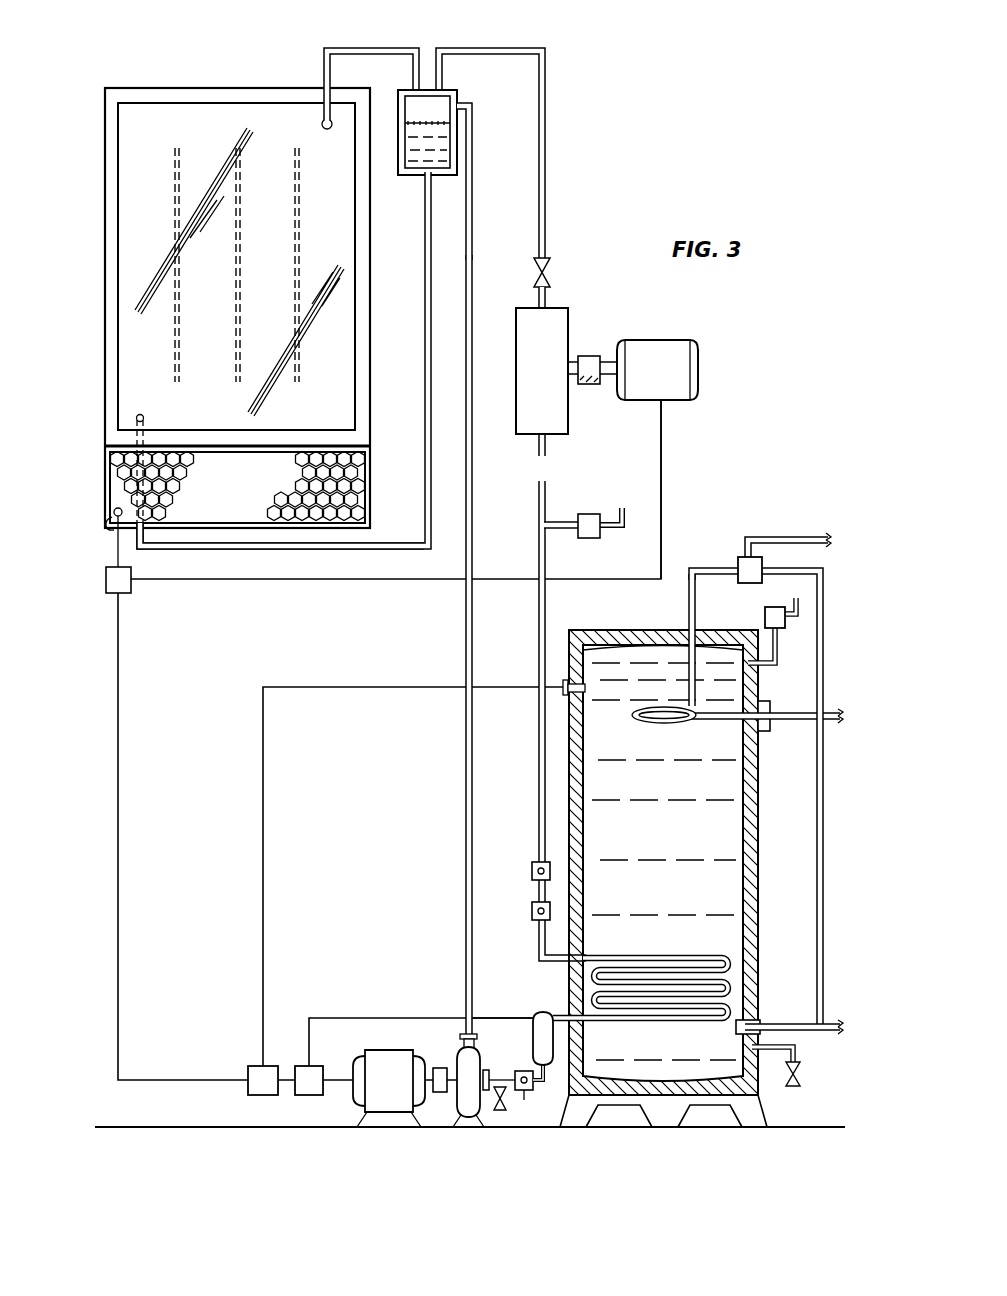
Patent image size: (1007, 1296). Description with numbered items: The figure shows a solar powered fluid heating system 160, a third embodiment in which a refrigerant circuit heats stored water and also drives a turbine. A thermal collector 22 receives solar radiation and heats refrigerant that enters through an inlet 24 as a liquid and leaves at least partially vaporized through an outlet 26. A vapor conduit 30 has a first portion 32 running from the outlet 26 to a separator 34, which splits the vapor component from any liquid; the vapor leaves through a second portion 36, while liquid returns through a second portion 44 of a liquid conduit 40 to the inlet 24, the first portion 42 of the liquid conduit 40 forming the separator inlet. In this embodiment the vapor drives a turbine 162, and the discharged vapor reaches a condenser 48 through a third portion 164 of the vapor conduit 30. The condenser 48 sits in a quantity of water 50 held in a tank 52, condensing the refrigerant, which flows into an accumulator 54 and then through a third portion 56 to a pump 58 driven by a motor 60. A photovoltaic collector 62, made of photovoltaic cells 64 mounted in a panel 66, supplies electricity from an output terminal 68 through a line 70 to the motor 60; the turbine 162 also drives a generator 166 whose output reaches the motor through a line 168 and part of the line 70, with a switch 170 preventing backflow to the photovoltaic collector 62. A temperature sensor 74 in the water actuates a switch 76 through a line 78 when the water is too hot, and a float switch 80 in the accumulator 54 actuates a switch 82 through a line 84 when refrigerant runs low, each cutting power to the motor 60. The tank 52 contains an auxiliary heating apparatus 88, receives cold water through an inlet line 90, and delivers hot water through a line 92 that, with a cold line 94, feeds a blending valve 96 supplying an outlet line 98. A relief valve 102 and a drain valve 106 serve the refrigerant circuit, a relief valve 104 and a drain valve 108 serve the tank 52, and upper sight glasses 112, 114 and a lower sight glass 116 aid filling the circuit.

The thermal collector 22 is at (190, 88).
The inlet 24 is at (147, 416).
The outlet 26 is at (320, 127).
The vapor conduit 30 is at (550, 92).
The first portion of the vapor conduit 32 is at (326, 47).
The separator 34 is at (456, 104).
The second portion of the vapor conduit 36 is at (550, 250).
The liquid conduit 40 is at (474, 208).
The first portion of the liquid conduit 42 is at (474, 258).
The second portion of the liquid conduit 44 is at (424, 220).
The condenser 48 is at (668, 956).
The quantity of water 50 is at (680, 896).
The tank 52 is at (760, 915).
The accumulator 54 is at (543, 1012).
The third portion of the liquid conduit 56 is at (526, 1071).
The pump 58 is at (457, 1102).
The motor 60 is at (368, 1052).
The photovoltaic collector 62 is at (236, 520).
The photovoltaic cells 64 is at (288, 505).
The panel 66 is at (213, 512).
The output terminal 68 is at (106, 536).
The line 70 is at (118, 716).
The temperature sensor 74 is at (560, 686).
The switch 76 is at (248, 1074).
The line 78 is at (263, 728).
The float switch 80 is at (533, 1018).
The switch 82 is at (302, 1066).
The line 84 is at (437, 1018).
The auxiliary heating apparatus 88 is at (673, 724).
The inlet line 90 is at (806, 1031).
The line 92 is at (690, 603).
The line 94 is at (816, 946).
The blending valve 96 is at (738, 562).
The outlet line 98 is at (770, 537).
The relief valve 102 is at (590, 539).
The relief valve 104 is at (765, 618).
The drain valve 106 is at (500, 1110).
The drain valve 108 is at (793, 1086).
The upper sight glass 112 is at (532, 870).
The upper sight glass 114 is at (532, 910).
The lower sight glass 116 is at (524, 1100).
The solar powered fluid heating system 160 is at (612, 232).
The turbine 162 is at (568, 322).
The third portion of the vapor conduit 164 is at (537, 640).
The generator 166 is at (698, 367).
The line 168 is at (378, 580).
The switch 170 is at (128, 594).